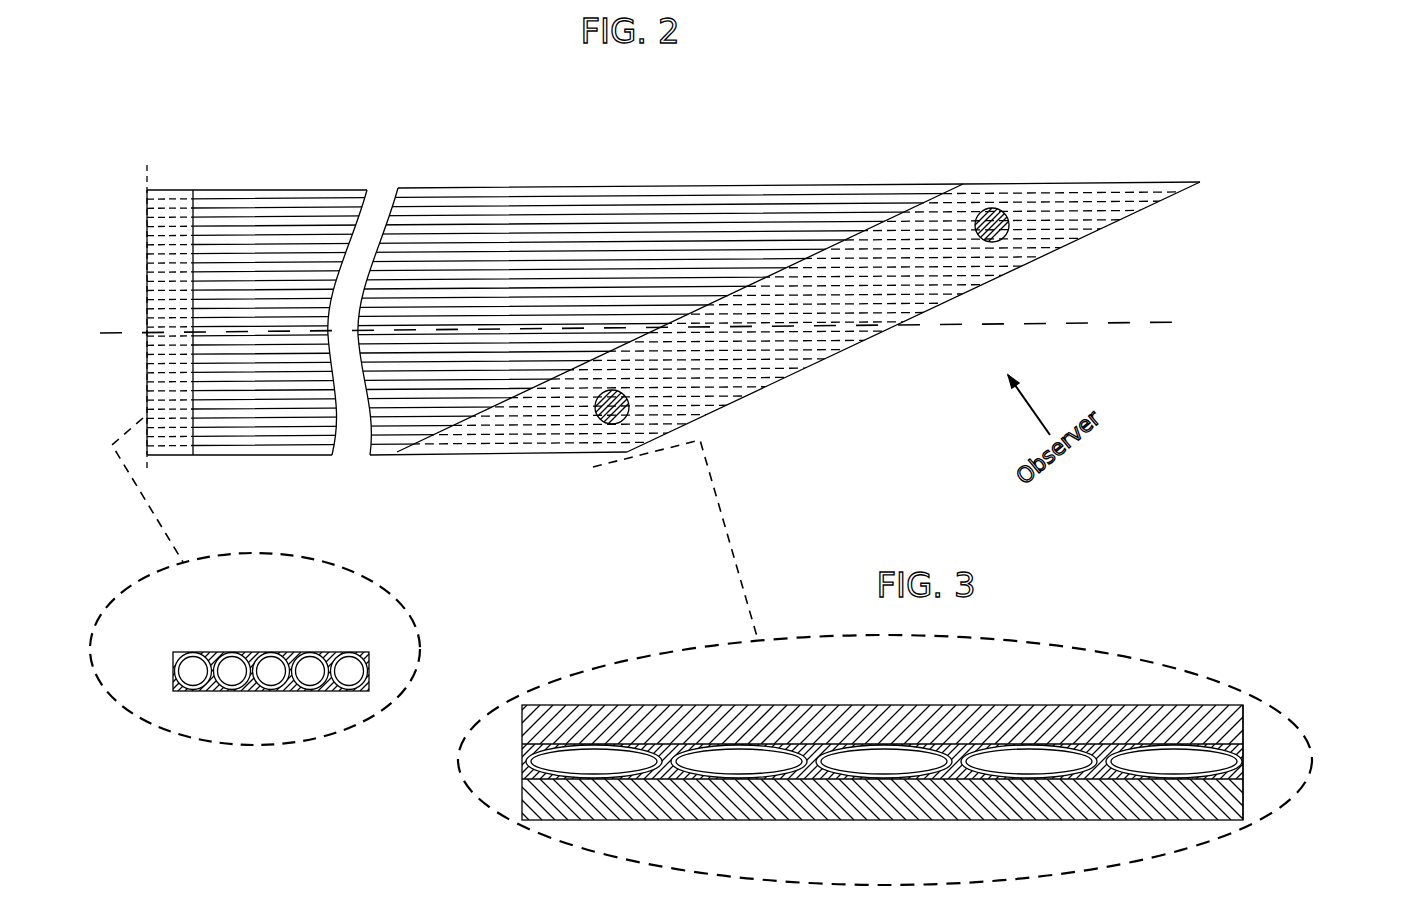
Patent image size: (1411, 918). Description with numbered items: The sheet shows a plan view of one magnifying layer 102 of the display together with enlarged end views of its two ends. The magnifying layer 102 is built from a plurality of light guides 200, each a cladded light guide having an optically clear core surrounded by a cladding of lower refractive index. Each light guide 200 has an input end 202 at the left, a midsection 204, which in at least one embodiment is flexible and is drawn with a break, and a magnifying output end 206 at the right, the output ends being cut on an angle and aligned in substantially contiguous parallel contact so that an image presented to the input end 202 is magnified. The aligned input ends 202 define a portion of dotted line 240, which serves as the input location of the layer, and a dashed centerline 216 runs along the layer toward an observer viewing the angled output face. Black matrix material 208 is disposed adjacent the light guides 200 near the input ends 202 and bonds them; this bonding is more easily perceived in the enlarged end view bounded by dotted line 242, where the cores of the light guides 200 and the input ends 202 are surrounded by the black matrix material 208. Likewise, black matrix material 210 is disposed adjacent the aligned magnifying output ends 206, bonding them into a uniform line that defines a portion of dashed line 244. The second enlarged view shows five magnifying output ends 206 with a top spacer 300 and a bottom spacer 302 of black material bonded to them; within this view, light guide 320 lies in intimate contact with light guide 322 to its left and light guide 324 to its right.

In FIG. 2, the magnifying layer 102 is at (755, 130).
In FIG. 2, the light guide 200 is at (604, 186).
In FIG. 3, the light guide 200 is at (1245, 762).
In FIG. 2, the input end 202 is at (140, 191).
In FIG. 2, the midsection 204 is at (270, 175).
In FIG. 2, the magnifying output end 206 is at (1199, 190).
In FIG. 3, the magnifying output end 206 is at (1210, 765).
In FIG. 2, the black matrix material 208 is at (172, 192).
In FIG. 2, the black matrix material 210 is at (927, 208).
In FIG. 3, the black matrix material 210 is at (523, 779).
In FIG. 2, the central axis 216 is at (669, 323).
In FIG. 2, the dotted line 240 is at (150, 302).
In FIG. 2, the dotted line 242 is at (262, 552).
In FIG. 2, the dashed line 244 is at (1106, 168).
In FIG. 3, the top spacer 300 is at (886, 716).
In FIG. 3, the bottom spacer 302 is at (905, 798).
In FIG. 3, the light guide 320 is at (896, 771).
In FIG. 3, the light guide 322 is at (752, 771).
In FIG. 3, the light guide 324 is at (1039, 771).